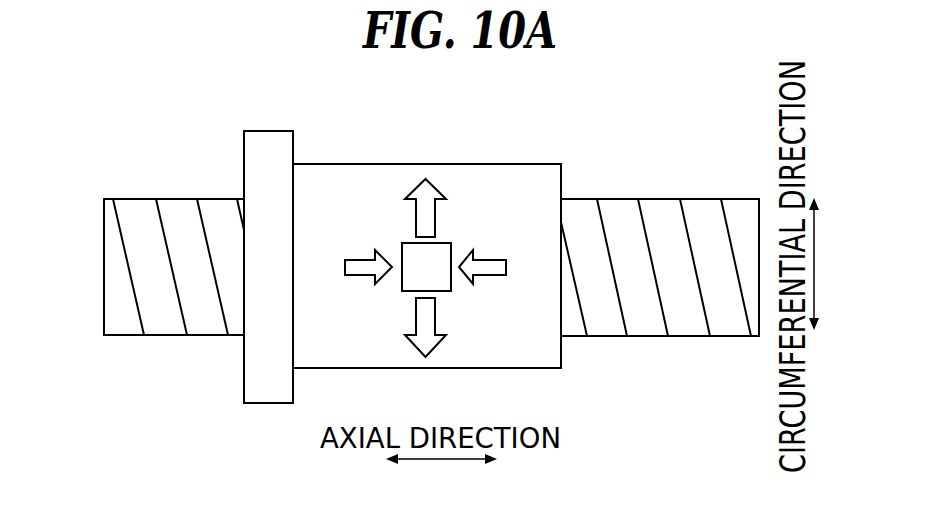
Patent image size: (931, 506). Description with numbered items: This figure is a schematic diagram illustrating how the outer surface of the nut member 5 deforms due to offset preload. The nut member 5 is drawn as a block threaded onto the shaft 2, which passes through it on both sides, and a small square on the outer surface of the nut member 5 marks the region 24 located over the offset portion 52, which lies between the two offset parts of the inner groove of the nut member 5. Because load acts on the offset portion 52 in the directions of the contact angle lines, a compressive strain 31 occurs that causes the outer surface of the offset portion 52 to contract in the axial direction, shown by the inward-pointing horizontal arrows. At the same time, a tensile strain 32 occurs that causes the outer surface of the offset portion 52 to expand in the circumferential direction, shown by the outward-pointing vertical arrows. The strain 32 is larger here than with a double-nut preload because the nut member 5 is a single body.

The screw shaft 2 is at (695, 213).
The nut member 5 is at (537, 180).
The sensor element 24 is at (440, 252).
The strain 31 is at (352, 275).
The strain 32 is at (416, 222).
The offset portion 52 is at (442, 300).